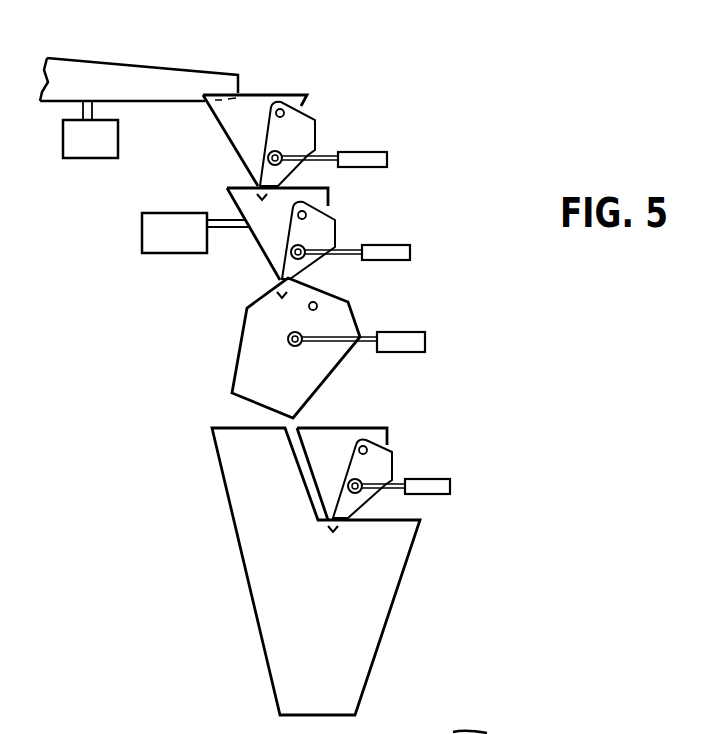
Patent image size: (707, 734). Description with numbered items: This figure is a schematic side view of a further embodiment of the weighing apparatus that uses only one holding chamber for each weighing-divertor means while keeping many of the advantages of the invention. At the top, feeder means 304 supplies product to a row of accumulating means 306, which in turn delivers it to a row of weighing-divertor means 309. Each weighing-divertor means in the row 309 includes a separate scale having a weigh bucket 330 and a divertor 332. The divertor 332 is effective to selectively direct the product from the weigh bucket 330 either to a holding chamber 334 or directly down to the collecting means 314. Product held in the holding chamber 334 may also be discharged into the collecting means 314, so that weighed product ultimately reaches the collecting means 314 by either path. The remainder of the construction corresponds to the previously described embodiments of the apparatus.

The feeder means 304 is at (140, 63).
The accumulating means 306 is at (315, 100).
The row of weighing-divertor means 309 is at (132, 190).
The collecting means 314 is at (382, 568).
The weigh bucket 330 is at (320, 198).
The divertor 332 is at (346, 300).
The holding chamber 334 is at (360, 426).